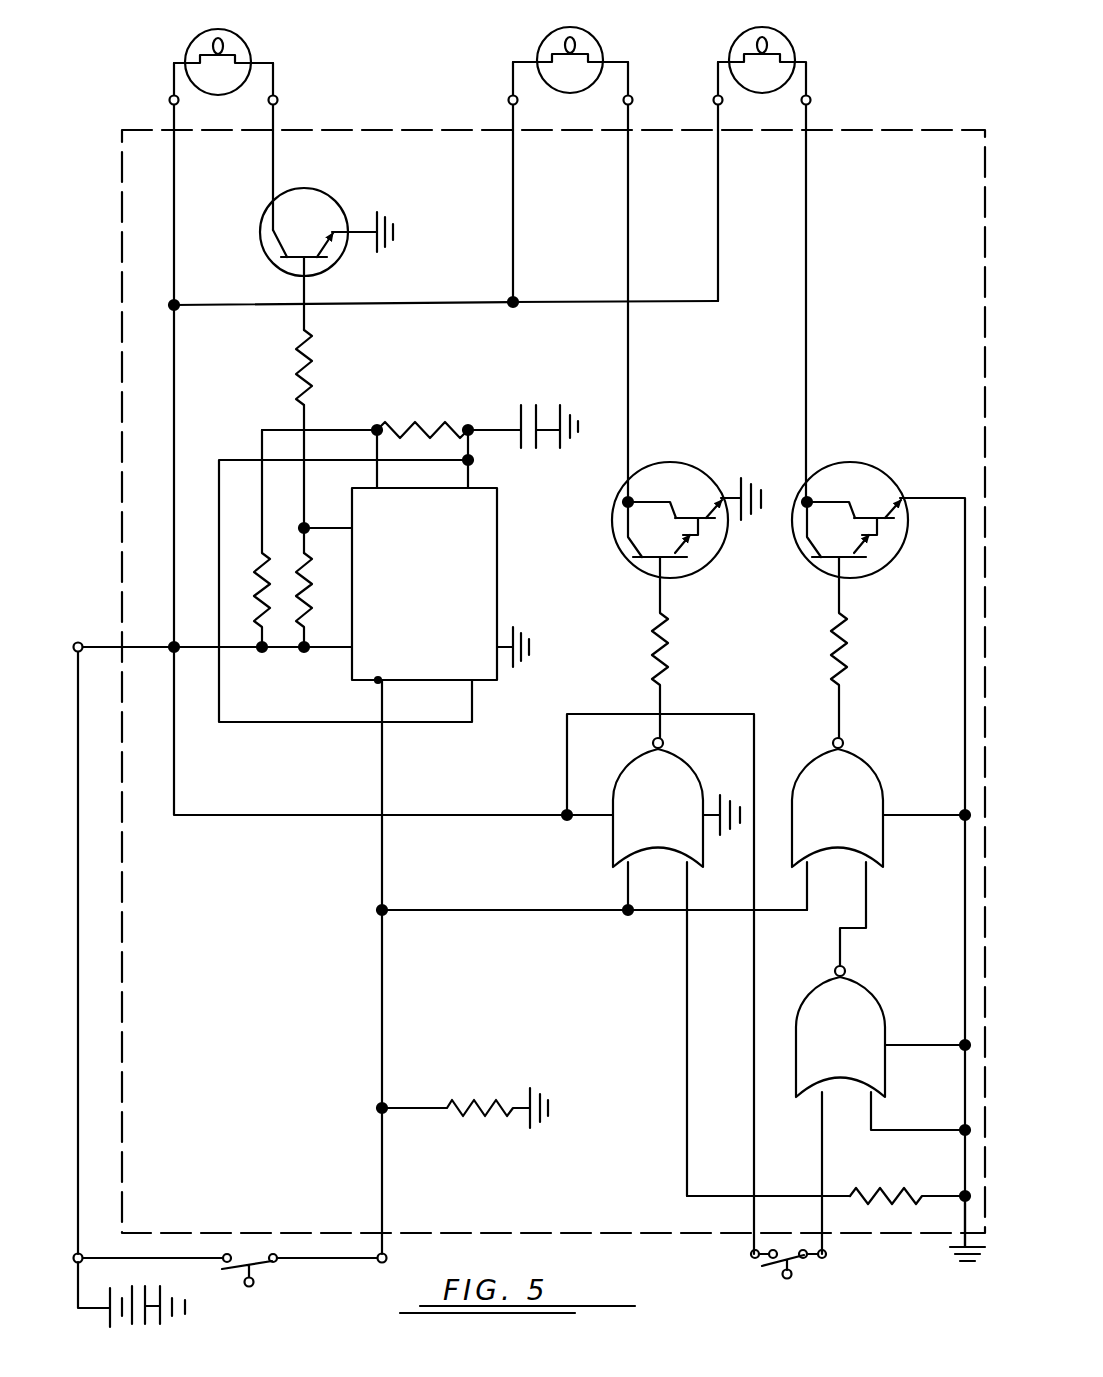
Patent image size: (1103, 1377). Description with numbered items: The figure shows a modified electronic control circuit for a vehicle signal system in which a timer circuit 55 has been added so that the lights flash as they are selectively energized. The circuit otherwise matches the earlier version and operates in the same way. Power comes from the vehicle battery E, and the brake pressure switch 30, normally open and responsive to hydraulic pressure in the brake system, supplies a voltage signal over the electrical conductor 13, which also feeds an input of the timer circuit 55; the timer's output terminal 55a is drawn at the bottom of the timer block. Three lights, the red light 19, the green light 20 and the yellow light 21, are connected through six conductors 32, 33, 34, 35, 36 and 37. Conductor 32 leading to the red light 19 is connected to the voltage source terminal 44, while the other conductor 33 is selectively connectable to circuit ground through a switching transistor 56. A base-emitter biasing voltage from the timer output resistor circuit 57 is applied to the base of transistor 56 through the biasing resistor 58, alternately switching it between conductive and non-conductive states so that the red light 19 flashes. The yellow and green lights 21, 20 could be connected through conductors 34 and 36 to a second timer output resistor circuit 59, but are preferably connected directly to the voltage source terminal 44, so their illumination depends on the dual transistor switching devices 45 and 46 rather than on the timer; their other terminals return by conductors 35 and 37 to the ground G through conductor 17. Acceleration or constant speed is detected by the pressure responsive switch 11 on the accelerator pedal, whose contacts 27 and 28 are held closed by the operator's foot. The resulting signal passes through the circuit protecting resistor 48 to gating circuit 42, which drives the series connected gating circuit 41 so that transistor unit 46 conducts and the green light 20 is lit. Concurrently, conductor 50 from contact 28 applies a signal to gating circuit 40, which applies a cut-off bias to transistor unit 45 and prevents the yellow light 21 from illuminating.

The red light 19 is at (240, 34).
The yellow light 21 is at (547, 34).
The green light 20 is at (752, 30).
The conductor 32 is at (178, 202).
The conductor 33 is at (275, 203).
The conductor 34 is at (511, 204).
The conductor 35 is at (626, 204).
The conductor 36 is at (716, 204).
The conductor 37 is at (808, 204).
The switching transistor 56 is at (357, 208).
The biasing resistor 58 is at (309, 351).
The second timer output resistor circuit 59 is at (420, 404).
The timer output resistor circuit 57 is at (338, 584).
The timer circuit 55 is at (467, 619).
The timer output terminal 55a is at (377, 683).
The voltage source terminal 44 is at (90, 630).
The electrical conductor 13 is at (388, 1142).
The dual transistor switching device 45 is at (699, 477).
The dual transistor switching device 46 is at (894, 478).
The gating circuit 40 is at (630, 832).
The gating circuit 41 is at (858, 798).
The gating circuit 42 is at (860, 1032).
The conductor 50 is at (684, 1140).
The circuit protecting resistor 48 is at (916, 1162).
The conductor 17 is at (962, 1218).
The ground connection G is at (957, 1265).
The contact 27 is at (749, 1254).
The contact 28 is at (829, 1254).
The pressure responsive switch 11 is at (772, 1275).
The brake pressure switch 30 is at (260, 1276).
The battery E is at (150, 1289).